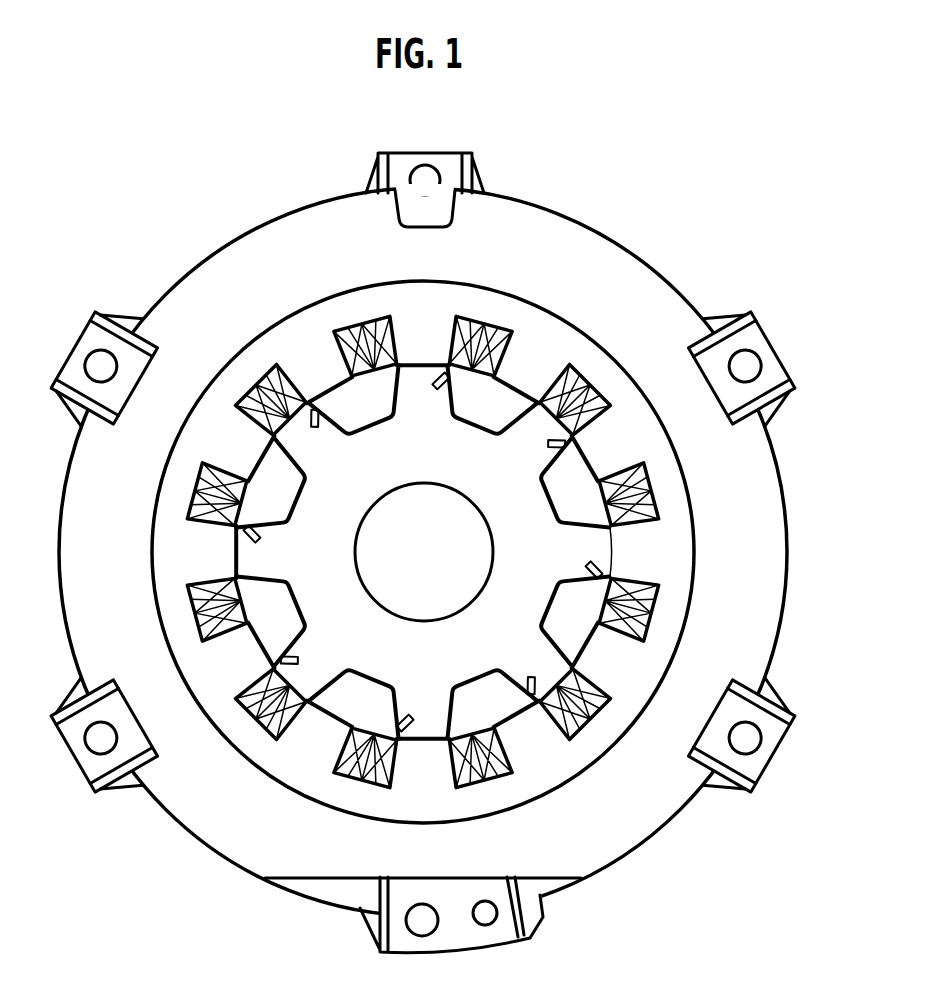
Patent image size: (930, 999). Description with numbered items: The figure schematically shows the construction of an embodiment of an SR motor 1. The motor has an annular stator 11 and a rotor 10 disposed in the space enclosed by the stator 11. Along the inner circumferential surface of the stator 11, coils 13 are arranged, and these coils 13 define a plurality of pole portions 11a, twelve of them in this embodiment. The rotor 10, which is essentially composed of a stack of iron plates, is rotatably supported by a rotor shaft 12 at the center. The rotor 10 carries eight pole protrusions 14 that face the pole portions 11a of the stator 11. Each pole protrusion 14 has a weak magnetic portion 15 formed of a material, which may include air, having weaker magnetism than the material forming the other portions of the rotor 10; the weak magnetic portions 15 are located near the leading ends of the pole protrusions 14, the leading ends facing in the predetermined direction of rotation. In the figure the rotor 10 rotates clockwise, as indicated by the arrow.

The SR motor 1 is at (723, 206).
The rotor 10 is at (467, 443).
The stator 11 is at (297, 342).
The pole portion 11a is at (216, 665).
The rotor shaft 12 is at (398, 586).
The coil 13 is at (585, 715).
The pole protrusion 14 is at (415, 388).
The weak magnetic portion 15 is at (440, 372).